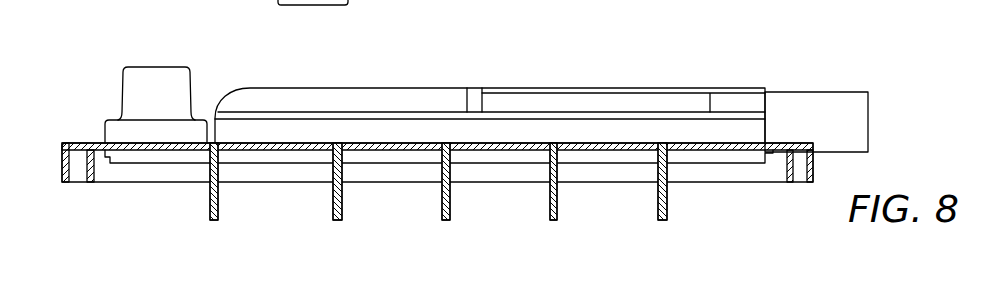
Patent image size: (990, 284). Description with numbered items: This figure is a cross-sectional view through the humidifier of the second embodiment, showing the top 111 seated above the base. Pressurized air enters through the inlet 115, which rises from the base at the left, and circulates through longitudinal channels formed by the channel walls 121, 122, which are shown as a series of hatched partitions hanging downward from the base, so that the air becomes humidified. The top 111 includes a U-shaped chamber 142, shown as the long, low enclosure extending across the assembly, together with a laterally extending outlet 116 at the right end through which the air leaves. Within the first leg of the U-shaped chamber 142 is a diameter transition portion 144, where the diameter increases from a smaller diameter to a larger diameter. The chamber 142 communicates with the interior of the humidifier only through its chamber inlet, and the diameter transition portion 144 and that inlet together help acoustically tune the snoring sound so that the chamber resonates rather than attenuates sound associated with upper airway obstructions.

The top 111 is at (667, 71).
The inlet 115 is at (147, 88).
The laterally extending outlet 116 is at (803, 103).
The channel wall 121 is at (218, 202).
The channel walls 122 is at (342, 202).
The U-shaped chamber 142 is at (313, 102).
The diameter transition portion 144 is at (473, 102).